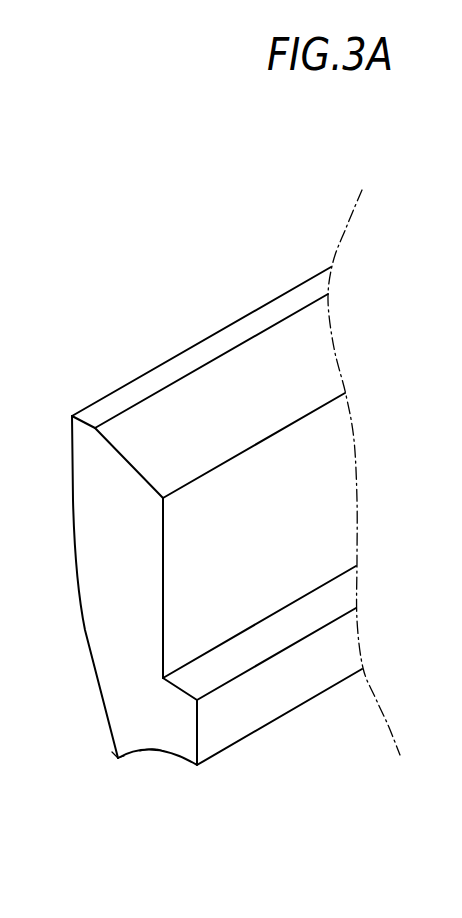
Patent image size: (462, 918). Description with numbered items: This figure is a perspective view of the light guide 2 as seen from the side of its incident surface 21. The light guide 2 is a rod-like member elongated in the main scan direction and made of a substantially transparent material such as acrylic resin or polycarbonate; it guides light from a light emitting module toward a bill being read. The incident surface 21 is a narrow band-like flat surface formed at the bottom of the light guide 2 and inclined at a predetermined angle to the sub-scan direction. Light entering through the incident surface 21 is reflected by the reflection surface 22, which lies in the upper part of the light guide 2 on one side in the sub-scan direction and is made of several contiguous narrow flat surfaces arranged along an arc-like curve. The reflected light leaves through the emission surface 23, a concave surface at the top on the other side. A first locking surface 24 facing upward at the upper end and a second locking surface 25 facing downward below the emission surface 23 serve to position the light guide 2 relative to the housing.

The light guide 2 is at (101, 361).
The incident surface 21 is at (237, 388).
The reflection surface 22 is at (63, 531).
The emission surface 23 is at (150, 752).
The first locking surface 24 is at (118, 758).
The second locking surface 25 is at (312, 608).